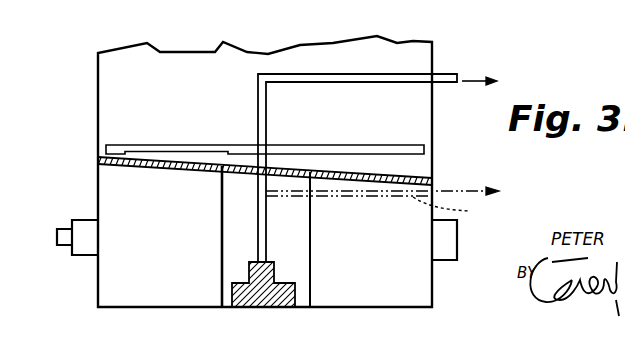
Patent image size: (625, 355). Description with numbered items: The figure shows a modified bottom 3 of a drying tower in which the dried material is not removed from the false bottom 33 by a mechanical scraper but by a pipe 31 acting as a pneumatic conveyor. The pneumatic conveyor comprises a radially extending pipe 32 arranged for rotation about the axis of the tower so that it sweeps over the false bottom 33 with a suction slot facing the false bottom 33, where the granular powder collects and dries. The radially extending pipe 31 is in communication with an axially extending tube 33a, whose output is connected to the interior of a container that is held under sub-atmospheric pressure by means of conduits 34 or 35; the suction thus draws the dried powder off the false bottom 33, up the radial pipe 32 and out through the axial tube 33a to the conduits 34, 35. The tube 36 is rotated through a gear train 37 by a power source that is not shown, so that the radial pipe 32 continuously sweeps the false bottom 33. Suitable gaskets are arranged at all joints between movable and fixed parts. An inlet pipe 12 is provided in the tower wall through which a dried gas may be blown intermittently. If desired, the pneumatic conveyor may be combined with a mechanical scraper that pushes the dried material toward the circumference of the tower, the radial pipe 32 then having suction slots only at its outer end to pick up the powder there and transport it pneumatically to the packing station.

The drying tower bottom 3 is at (103, 284).
The inlet pipe 12 is at (72, 223).
The pipe 31 is at (343, 206).
The radially extending pipe 32 is at (166, 145).
The false bottom 33 is at (98, 159).
The axially extending tube 33a is at (255, 202).
The conduit 34 is at (437, 72).
The conduit 35 is at (470, 212).
The tube 36 is at (258, 102).
The gear train 37 is at (294, 294).